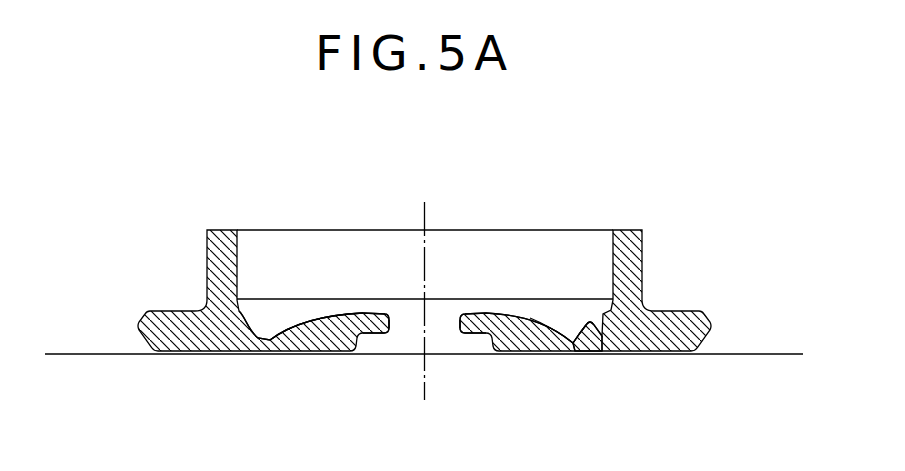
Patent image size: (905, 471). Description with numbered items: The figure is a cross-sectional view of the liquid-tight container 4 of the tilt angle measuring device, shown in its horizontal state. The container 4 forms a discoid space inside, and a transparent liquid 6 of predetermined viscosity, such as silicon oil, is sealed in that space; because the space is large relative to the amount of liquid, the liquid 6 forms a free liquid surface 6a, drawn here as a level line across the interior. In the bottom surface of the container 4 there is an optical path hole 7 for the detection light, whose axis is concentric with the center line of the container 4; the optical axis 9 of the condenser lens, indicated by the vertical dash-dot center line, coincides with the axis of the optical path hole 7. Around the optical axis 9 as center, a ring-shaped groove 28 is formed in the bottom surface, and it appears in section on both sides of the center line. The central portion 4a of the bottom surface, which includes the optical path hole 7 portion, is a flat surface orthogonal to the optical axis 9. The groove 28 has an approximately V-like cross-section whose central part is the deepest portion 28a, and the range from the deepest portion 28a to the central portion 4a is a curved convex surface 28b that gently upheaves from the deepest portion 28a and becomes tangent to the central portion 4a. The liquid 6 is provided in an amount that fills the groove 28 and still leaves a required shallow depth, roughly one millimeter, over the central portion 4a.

The container 4 is at (644, 250).
The central portion 4a is at (351, 316).
The liquid 6 is at (297, 308).
The free liquid surface 6a is at (480, 300).
The optical path hole 7 is at (403, 324).
The optical axis 9 is at (426, 213).
The groove 28 is at (600, 347).
The deepest portion 28a is at (575, 355).
The curved convex surface 28b is at (544, 323).